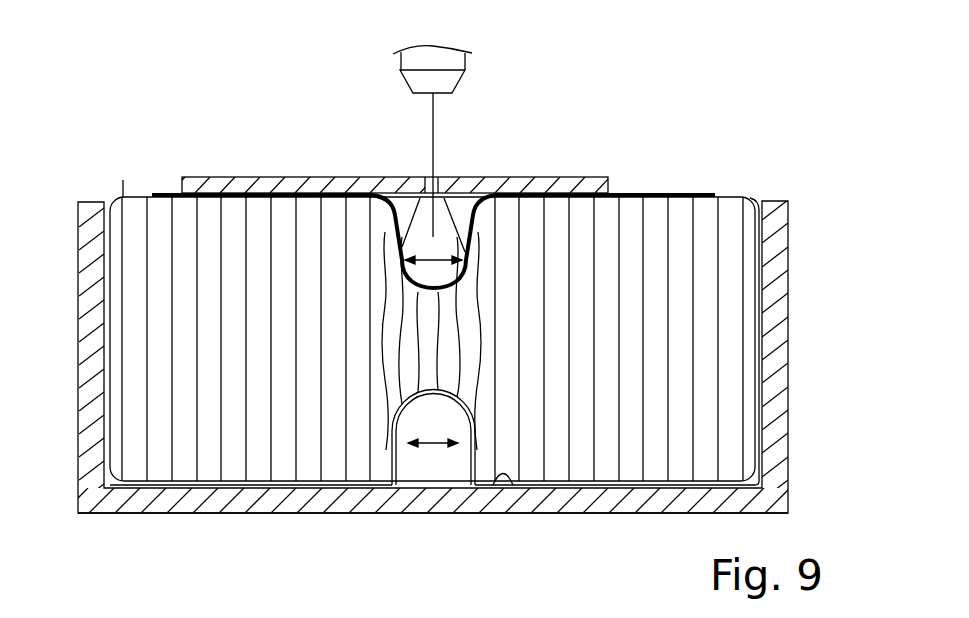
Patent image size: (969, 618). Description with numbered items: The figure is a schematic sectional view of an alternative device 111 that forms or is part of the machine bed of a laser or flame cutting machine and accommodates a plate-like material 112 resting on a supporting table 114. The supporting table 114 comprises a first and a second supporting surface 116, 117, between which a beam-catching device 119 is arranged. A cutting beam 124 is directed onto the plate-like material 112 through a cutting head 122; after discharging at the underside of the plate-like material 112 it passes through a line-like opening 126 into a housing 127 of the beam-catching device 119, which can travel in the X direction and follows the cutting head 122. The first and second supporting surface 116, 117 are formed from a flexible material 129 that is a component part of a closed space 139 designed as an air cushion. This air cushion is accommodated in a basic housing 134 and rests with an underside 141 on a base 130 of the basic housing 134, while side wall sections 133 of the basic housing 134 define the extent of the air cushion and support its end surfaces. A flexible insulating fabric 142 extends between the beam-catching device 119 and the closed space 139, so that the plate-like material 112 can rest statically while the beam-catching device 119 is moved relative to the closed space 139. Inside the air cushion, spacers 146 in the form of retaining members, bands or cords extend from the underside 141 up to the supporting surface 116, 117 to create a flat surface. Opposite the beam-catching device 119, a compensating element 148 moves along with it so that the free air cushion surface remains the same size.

The device 111 is at (758, 174).
The plate-like material 112 is at (577, 185).
The supporting table 114 is at (683, 122).
The first supporting surface 116 is at (660, 191).
The second supporting surface 117 is at (170, 190).
The beam-catching device 119 is at (441, 232).
The cutting head 122 is at (453, 61).
The cutting beam 124 is at (433, 145).
The line-like opening 126 is at (403, 205).
The housing 127 is at (385, 191).
The flexible material 129 is at (118, 198).
The base 130 is at (503, 473).
The side wall sections 133 is at (777, 368).
The basic housing 134 is at (625, 498).
The closed space 139 is at (138, 253).
The underside 141 is at (255, 490).
The flexible insulating fabric 142 is at (152, 195).
The spacers 146 is at (643, 278).
The compensating element 148 is at (435, 457).